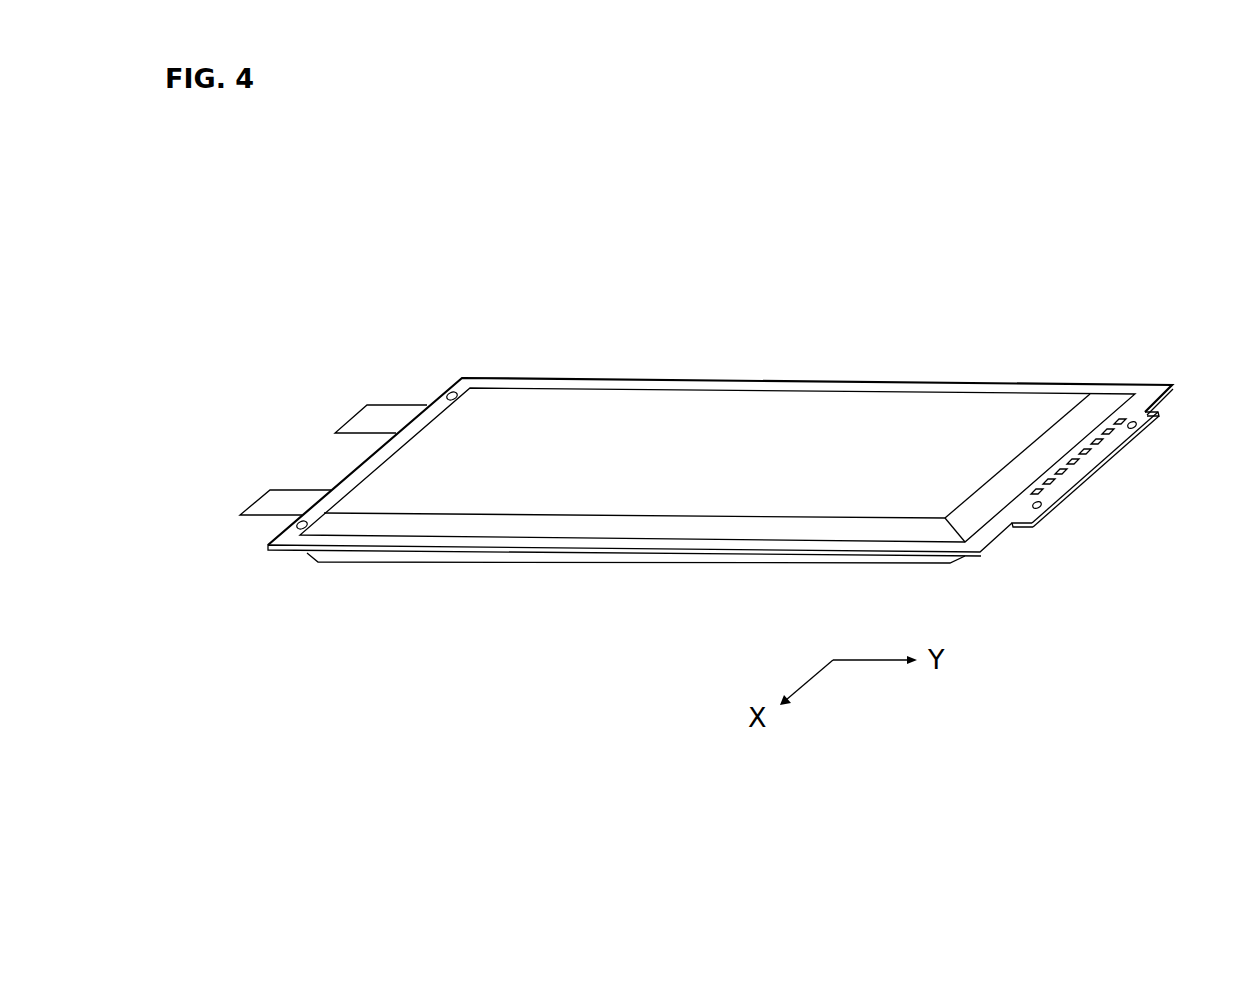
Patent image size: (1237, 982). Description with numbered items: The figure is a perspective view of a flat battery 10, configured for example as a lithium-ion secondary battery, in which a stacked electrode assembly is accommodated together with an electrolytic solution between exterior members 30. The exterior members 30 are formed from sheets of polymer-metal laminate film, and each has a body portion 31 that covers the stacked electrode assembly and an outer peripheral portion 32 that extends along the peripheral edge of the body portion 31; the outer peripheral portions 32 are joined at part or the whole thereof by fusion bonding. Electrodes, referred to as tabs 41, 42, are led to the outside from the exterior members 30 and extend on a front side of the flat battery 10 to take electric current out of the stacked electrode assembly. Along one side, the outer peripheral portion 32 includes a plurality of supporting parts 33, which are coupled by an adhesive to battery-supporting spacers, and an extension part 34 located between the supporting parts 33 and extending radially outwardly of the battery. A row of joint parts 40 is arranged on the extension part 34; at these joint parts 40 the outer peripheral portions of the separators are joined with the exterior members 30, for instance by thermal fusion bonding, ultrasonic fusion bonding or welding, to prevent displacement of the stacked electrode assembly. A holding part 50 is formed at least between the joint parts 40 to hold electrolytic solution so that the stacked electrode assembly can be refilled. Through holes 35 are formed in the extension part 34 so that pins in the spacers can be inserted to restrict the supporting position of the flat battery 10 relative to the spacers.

The flat battery 10 is at (564, 235).
The exterior member 30 is at (785, 415).
The body portion 31 is at (935, 405).
The outer peripheral portion 32 is at (1023, 383).
The supporting part 33 is at (1165, 392).
The extension part 34 is at (1120, 435).
The through hole 35 is at (1138, 425).
The joint part 40 is at (1086, 453).
The electrode (tab) 41 is at (393, 415).
The electrode (tab) 42 is at (289, 502).
The holding part 50 is at (1114, 438).